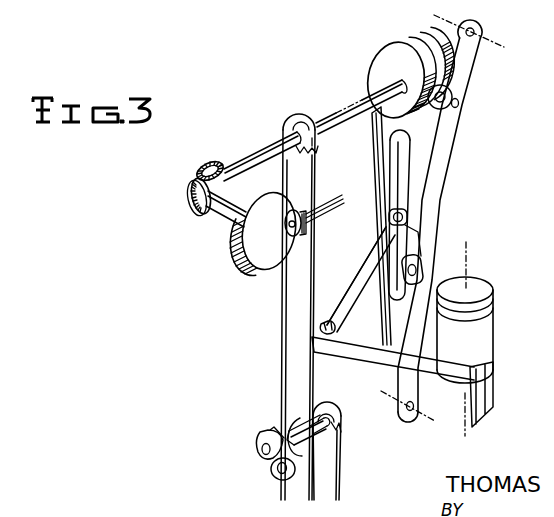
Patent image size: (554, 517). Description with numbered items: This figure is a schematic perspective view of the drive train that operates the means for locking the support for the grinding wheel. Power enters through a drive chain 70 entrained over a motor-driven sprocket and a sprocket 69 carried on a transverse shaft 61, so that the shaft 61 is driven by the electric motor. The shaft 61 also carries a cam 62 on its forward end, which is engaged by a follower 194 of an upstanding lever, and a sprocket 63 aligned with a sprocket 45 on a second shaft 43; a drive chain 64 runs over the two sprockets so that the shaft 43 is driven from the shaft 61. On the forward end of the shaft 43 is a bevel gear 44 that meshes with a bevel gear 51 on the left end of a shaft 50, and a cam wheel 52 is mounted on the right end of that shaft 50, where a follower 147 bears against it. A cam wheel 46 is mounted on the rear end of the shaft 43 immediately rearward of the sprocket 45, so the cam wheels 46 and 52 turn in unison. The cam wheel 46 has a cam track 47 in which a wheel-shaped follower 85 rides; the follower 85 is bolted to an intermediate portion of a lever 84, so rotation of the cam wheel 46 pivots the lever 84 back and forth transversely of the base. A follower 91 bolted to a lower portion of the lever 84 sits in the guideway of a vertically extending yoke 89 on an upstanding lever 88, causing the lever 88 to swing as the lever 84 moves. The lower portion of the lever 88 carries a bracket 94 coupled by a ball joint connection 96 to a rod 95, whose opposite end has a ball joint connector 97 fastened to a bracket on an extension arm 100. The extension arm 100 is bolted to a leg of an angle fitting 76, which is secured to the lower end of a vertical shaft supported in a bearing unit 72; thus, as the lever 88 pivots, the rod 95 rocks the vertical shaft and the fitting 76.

The shaft 43 is at (262, 148).
The bevel gear 44 is at (207, 162).
The sprocket 45 is at (305, 114).
The cam wheel 46 is at (392, 42).
The cam track 47 is at (417, 34).
The shaft 50 is at (226, 222).
The bevel gear 51 is at (196, 212).
The cam wheel 52 is at (246, 268).
The shaft 61 is at (333, 409).
The cam 62 is at (261, 436).
The sprocket 63 is at (292, 421).
The drive chain 64 is at (281, 320).
The sprocket 69 is at (341, 421).
The drive chain 70 is at (341, 456).
The bearing unit 72 is at (497, 301).
The angle fitting 76 is at (499, 368).
The lever 84 is at (444, 146).
The follower 85 is at (446, 118).
The upstanding lever 88 is at (378, 219).
The yoke 89 is at (420, 238).
The follower 91 is at (420, 270).
The bracket 94 is at (386, 275).
The rod 95 is at (356, 282).
The ball joint connection 96 is at (408, 216).
The ball joint connector 97 is at (337, 328).
The extension arm 100 is at (346, 351).
The follower 147 is at (332, 206).
The follower 194 is at (277, 479).